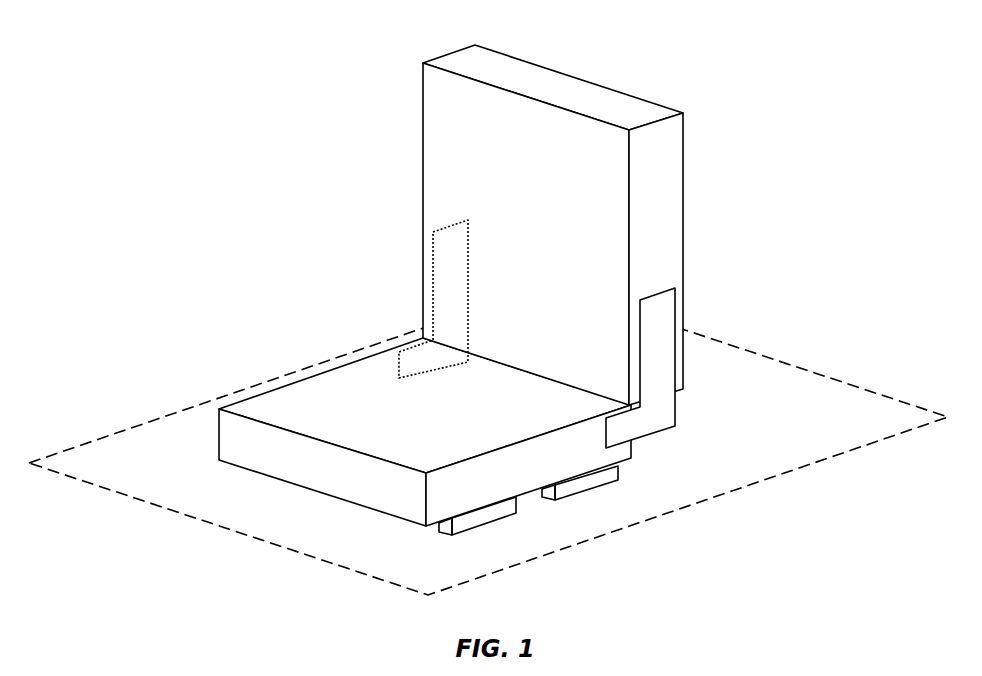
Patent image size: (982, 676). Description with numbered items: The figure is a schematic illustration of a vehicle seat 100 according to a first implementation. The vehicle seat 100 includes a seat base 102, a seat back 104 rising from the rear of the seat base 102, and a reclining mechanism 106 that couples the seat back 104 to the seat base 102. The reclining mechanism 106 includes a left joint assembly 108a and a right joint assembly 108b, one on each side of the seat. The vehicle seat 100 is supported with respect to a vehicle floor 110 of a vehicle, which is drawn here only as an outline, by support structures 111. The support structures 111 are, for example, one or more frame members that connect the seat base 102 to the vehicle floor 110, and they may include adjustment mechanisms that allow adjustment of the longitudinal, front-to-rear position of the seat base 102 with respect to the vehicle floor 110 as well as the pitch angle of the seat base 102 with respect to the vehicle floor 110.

The vehicle seat 100 is at (290, 61).
The seat base 102 is at (219, 452).
The seat back 104 is at (423, 173).
The reclining mechanism 106 is at (360, 250).
The left joint assembly 108a is at (675, 322).
The right joint assembly 108b is at (433, 300).
The vehicle floor 110 is at (807, 367).
The support structures 111 is at (478, 526).